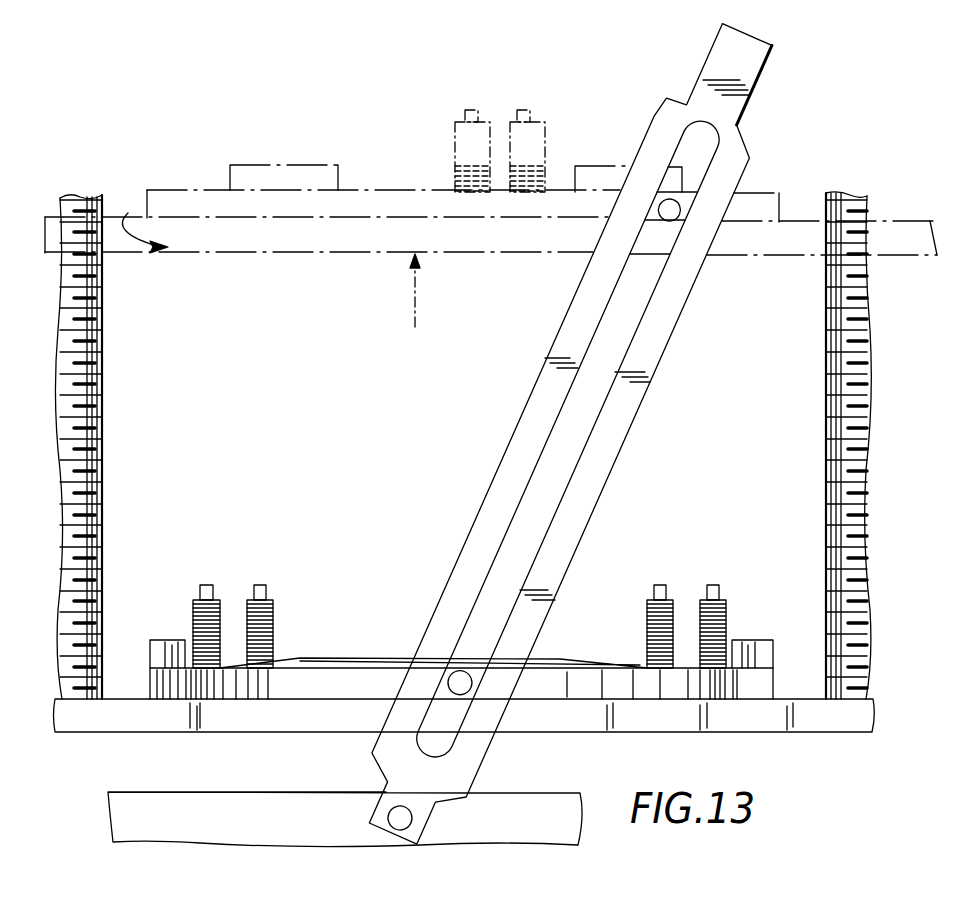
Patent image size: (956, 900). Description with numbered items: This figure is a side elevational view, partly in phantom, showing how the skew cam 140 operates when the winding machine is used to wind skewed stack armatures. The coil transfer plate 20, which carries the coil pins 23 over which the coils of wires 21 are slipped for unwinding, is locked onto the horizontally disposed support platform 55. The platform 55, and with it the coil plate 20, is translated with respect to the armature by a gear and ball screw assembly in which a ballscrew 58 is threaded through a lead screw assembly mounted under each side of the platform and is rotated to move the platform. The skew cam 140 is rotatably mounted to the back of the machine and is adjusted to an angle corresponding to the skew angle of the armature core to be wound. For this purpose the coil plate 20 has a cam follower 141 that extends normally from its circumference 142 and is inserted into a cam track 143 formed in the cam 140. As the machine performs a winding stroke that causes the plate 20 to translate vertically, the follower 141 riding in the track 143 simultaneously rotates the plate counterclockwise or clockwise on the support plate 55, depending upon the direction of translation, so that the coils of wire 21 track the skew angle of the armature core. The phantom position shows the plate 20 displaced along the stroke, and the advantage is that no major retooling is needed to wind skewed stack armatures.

The coil transfer plate 20 is at (745, 220).
The wires 21 is at (296, 660).
The coil pins 23 is at (530, 117).
The support platform 55 is at (237, 245).
The ballscrew 58 is at (105, 257).
The skew cam 140 is at (753, 70).
The cam follower 141 is at (673, 222).
The circumference 142 is at (485, 213).
The cam track 143 is at (588, 419).